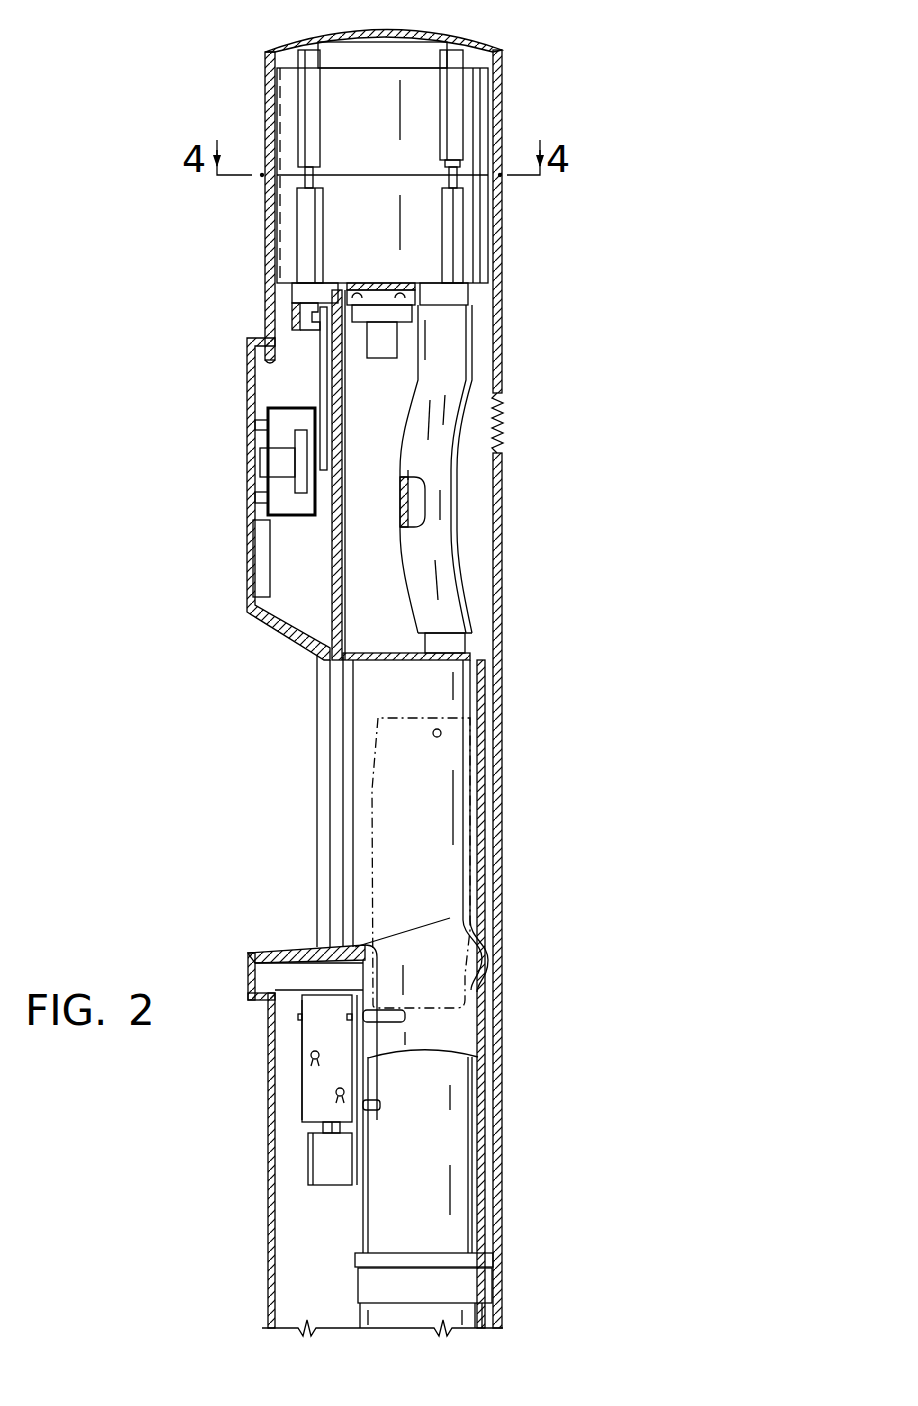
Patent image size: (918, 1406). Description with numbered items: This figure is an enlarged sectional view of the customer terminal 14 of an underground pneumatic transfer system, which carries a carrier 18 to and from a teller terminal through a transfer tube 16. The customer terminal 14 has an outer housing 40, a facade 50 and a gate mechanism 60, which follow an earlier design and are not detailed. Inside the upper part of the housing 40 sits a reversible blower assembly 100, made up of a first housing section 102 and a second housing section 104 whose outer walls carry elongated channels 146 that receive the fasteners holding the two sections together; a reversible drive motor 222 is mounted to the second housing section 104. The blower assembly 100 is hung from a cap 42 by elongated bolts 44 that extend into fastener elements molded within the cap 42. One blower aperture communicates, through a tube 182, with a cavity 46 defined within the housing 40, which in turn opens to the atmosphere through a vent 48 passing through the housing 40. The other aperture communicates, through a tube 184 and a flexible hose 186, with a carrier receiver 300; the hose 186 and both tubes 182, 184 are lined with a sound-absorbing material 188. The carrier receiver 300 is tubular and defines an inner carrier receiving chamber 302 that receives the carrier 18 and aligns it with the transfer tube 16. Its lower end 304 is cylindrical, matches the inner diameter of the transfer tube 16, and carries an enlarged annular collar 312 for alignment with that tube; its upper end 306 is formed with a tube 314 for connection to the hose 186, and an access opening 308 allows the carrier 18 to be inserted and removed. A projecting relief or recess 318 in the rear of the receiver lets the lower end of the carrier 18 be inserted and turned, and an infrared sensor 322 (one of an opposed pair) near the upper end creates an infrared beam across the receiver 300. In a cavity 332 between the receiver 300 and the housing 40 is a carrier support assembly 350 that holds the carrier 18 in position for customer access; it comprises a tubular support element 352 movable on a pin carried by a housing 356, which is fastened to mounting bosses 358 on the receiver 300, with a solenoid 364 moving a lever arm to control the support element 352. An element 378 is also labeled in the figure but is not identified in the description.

The customer terminal 14 is at (150, 92).
The transfer tube 16 is at (482, 1318).
The carrier 18 is at (380, 845).
The outer housing 40 is at (500, 280).
The cap 42 is at (443, 33).
The elongated bolts 44 is at (298, 192).
The cavity 46 is at (395, 412).
The vent 48 is at (500, 432).
The facade 50 is at (245, 570).
The gate mechanism 60 is at (300, 393).
The reversible blower assembly 100 is at (497, 108).
The first housing section 102 is at (270, 90).
The second housing section 104 is at (268, 236).
The elongated channels 146 is at (456, 240).
The cylindrical tube 182 is at (300, 293).
The cylindrical tube 184 is at (470, 298).
The flexible hose 186 is at (455, 548).
The sound-absorbing material 188 is at (297, 313).
The reversible drive motor 222 is at (396, 348).
The carrier receiver 300 is at (484, 690).
The inner carrier receiving chamber 302 is at (365, 688).
The lower end 304 is at (470, 1240).
The upper end 306 is at (470, 655).
The access opening 308 is at (348, 775).
The enlarged annular collar 312 is at (490, 1280).
The tube 314 is at (445, 635).
The projecting relief or recess 318 is at (491, 955).
The infrared sensors 322 is at (441, 733).
The cavity 332 is at (295, 1212).
The carrier support assembly 350 is at (297, 1045).
The tubular support element 352 is at (405, 1016).
The housing 356 is at (300, 1092).
The mounting bosses 358 is at (382, 1105).
The solenoid 364 is at (320, 1160).
The lead 378 is at (308, 1128).